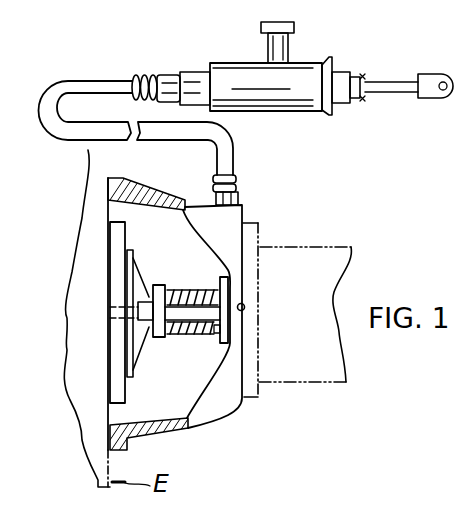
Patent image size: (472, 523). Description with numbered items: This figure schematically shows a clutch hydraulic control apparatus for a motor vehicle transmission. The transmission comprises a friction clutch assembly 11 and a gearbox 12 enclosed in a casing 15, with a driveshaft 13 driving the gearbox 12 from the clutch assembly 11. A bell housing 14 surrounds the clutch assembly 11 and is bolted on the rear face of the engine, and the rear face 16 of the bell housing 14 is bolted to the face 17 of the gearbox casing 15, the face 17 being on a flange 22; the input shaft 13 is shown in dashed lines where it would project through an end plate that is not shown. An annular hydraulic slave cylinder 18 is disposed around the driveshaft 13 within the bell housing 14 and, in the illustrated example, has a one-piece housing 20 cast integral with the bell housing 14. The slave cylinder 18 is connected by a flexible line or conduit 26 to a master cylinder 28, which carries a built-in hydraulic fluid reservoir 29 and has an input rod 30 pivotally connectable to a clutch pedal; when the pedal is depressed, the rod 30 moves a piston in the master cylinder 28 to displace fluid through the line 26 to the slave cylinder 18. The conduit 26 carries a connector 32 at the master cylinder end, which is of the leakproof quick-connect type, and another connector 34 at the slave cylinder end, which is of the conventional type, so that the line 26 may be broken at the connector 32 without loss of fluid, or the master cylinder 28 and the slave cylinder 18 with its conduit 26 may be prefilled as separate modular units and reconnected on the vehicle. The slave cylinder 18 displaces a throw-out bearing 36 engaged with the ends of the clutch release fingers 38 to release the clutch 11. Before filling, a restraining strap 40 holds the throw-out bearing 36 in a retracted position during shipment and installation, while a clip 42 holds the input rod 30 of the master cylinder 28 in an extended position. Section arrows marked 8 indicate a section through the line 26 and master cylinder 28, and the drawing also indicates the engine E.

The section line 8 is at (102, 92).
The friction clutch assembly 11 is at (133, 239).
The gearbox 12 is at (328, 243).
The driveshaft 13 is at (113, 303).
The bell housing 14 is at (182, 187).
The casing 15 is at (329, 382).
The rear face 16 is at (243, 363).
The face 17 is at (245, 305).
The annular hydraulic slave cylinder 18 is at (179, 337).
The one-piece housing 20 is at (214, 344).
The flange 22 is at (248, 405).
The line or conduit 26 is at (63, 76).
The master cylinder 28 is at (319, 118).
The hydraulic fluid reservoir 29 is at (289, 23).
The input rod 30 is at (399, 90).
The connector 32 is at (170, 70).
The connector 34 is at (246, 200).
The throw-out bearing 36 is at (148, 300).
The clutch release fingers 38 is at (133, 340).
The restraining strap 40 is at (195, 292).
The clip 42 is at (361, 80).